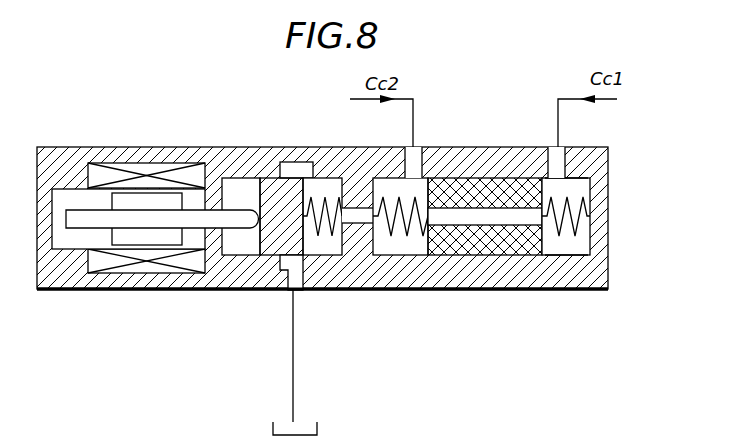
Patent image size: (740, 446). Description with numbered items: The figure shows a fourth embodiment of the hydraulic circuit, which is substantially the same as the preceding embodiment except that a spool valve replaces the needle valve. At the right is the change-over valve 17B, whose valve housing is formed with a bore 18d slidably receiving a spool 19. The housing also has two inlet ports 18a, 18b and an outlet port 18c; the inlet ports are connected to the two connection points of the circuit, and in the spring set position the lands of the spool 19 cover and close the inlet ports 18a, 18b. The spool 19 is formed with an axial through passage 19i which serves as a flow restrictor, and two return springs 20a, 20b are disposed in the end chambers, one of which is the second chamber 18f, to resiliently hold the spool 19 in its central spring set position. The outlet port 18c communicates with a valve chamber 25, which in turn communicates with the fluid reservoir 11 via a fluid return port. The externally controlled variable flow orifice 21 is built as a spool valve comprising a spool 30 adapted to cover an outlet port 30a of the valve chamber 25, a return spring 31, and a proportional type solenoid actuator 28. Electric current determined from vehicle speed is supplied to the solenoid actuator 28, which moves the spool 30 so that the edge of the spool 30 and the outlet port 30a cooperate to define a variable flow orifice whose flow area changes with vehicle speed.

The fluid reservoir 11 is at (329, 368).
The change-over valve 17B is at (469, 300).
The inlet port 18a is at (405, 146).
The inlet port 18b is at (548, 146).
The outlet port 18c is at (360, 218).
The bore 18d is at (563, 247).
The second chamber 18f is at (578, 189).
The spool 19 is at (471, 146).
The axial through passage 19i is at (495, 218).
The return spring 20a is at (417, 242).
The return spring 20b is at (572, 257).
The externally controlled variable flow orifice 21 is at (161, 298).
The valve chamber 25 is at (233, 183).
The proportional type solenoid actuator 28 is at (147, 168).
The spool 30 is at (270, 185).
The outlet port 30a is at (312, 292).
The return spring 31 is at (315, 146).